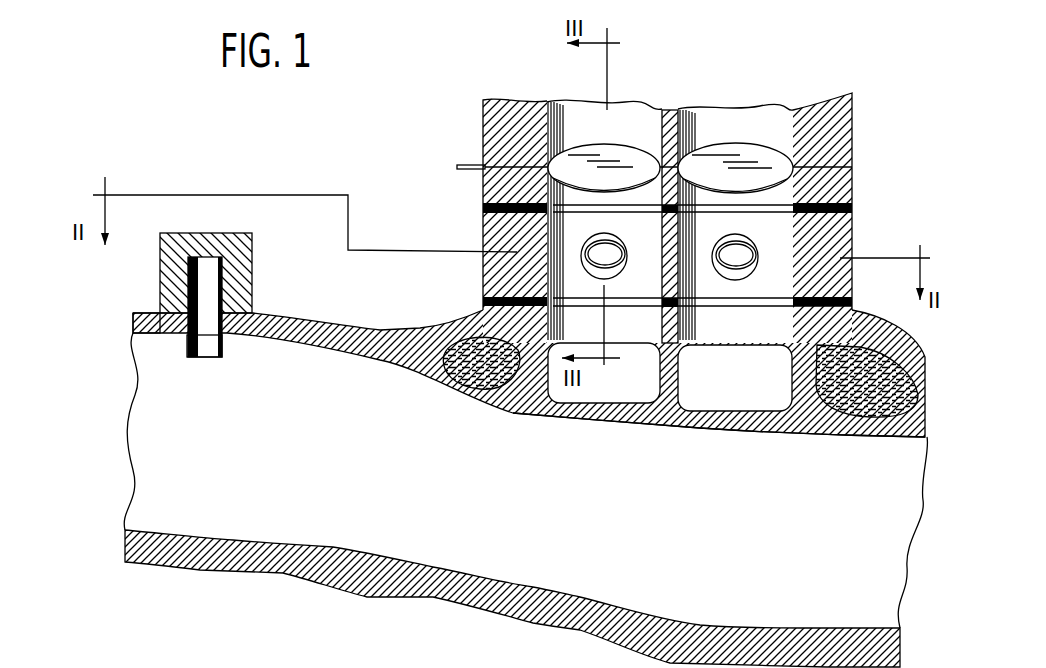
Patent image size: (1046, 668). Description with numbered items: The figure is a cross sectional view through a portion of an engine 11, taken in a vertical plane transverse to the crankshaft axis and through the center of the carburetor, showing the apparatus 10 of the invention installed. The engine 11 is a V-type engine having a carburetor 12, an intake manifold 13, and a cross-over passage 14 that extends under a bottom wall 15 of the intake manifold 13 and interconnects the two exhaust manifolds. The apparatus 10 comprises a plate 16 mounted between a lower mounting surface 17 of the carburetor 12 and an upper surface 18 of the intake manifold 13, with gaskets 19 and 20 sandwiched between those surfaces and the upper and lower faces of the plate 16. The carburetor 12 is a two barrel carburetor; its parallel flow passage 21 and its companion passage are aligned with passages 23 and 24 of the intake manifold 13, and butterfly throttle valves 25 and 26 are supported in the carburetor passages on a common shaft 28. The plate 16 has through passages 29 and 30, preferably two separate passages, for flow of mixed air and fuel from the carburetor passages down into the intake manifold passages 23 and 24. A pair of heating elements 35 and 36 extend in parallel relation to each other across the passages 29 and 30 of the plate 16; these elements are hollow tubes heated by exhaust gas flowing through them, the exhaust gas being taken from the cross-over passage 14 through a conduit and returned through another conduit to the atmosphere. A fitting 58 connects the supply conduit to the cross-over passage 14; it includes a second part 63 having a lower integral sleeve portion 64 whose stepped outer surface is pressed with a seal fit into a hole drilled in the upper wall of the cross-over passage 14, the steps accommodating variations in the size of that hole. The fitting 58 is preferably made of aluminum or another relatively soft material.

The apparatus 10 is at (295, 186).
The engine 11 is at (131, 312).
The carburetor 12 is at (467, 108).
The intake manifold 13 is at (420, 327).
The cross-over passage 14 is at (553, 588).
The bottom wall 15 is at (687, 420).
The plate 16 is at (483, 243).
The lower mounting surface 17 is at (483, 220).
The upper surface 18 is at (483, 292).
The gasket 19 is at (852, 210).
The gasket 20 is at (850, 300).
The flow passage 21 is at (551, 110).
The intake manifold passage 23 is at (540, 322).
The intake manifold passage 24 is at (790, 317).
The butterfly throttle valve 25 is at (632, 152).
The butterfly throttle valve 26 is at (747, 152).
The common shaft 28 is at (457, 167).
The through passage 29 is at (500, 272).
The through passage 30 is at (790, 233).
The heating element 35 is at (613, 268).
The heating element 36 is at (742, 270).
The fitting 58 is at (245, 230).
The second part 63 is at (243, 250).
The sleeve portion 64 is at (225, 345).